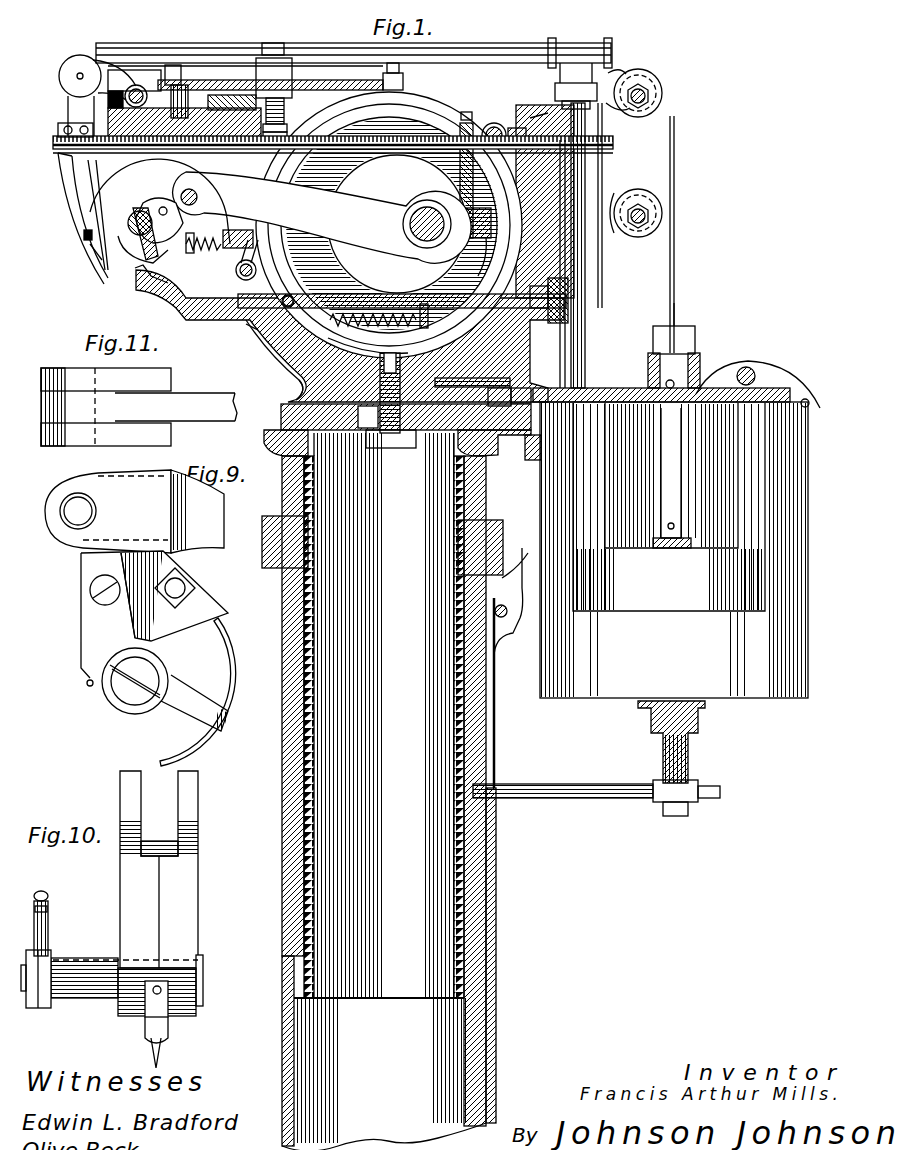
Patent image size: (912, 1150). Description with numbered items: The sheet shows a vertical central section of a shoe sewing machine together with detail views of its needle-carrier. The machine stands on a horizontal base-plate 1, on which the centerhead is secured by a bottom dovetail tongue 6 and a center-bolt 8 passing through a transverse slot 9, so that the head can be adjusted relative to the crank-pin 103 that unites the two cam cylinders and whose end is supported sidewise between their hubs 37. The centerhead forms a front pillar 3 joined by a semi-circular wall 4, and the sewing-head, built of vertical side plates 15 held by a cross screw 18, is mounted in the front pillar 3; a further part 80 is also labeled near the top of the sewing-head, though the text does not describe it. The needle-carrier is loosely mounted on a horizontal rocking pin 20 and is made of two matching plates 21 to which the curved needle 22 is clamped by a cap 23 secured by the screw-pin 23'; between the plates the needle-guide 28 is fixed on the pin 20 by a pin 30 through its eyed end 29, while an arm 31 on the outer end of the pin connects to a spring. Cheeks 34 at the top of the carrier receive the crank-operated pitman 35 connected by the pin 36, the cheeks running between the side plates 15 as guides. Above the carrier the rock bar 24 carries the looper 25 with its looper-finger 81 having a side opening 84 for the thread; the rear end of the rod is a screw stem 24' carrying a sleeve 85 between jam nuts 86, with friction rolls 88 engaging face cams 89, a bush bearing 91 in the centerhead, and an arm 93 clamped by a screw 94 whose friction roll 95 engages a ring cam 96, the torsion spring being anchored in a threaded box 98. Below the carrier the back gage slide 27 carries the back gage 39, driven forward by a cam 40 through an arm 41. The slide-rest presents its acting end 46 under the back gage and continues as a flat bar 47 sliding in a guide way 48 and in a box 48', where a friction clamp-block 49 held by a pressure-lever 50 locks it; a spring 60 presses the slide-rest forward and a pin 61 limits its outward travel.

In FIG. 1, the base-plate 1 is at (398, 417).
In FIG. 1, the front pillar 3 is at (350, 336).
In FIG. 1, the semi-circular wall 4 is at (364, 351).
In FIG. 1, the bottom dovetail tongue 6 is at (284, 378).
In FIG. 1, the center-bolt 8 is at (391, 449).
In FIG. 1, the transverse slot 9 is at (381, 393).
In FIG. 1, the vertical side plates 15 is at (160, 201).
In FIG. 1, the cross screw 18 is at (104, 112).
In FIG. 1, the rocking pin 20 is at (120, 212).
In FIG. 9, the rocking pin 20 is at (135, 681).
In FIG. 10, the rocking pin 20 is at (112, 975).
In FIG. 1, the matching plates 21 is at (150, 198).
In FIG. 9, the matching plates 21 is at (154, 614).
In FIG. 10, the matching plates 21 is at (159, 869).
In FIG. 1, the curved needle 22 is at (124, 244).
In FIG. 9, the curved needle 22 is at (184, 747).
In FIG. 10, the curved needle 22 is at (167, 1054).
In FIG. 9, the cap 23 is at (78, 598).
In FIG. 9, the screw-pin 23' is at (201, 588).
In FIG. 1, the rock bar 24 is at (333, 203).
In FIG. 1, the screw stem 24' is at (597, 245).
In FIG. 1, the looper 25 is at (68, 188).
In FIG. 1, the back gage slide 27 is at (238, 230).
In FIG. 1, the needle-guide 28 is at (139, 234).
In FIG. 9, the needle-guide 28 is at (176, 698).
In FIG. 10, the needle-guide 28 is at (138, 1024).
In FIG. 10, the eyed end 29 is at (160, 1010).
In FIG. 9, the pin 30 is at (80, 680).
In FIG. 10, the pin 30 is at (110, 998).
In FIG. 1, the arm 31 is at (545, 201).
In FIG. 10, the arm 31 is at (38, 924).
In FIG. 11, the cheeks 34 is at (106, 407).
In FIG. 9, the cheeks 34 is at (108, 511).
In FIG. 10, the cheeks 34 is at (112, 790).
In FIG. 1, the pitman 35 is at (322, 217).
In FIG. 11, the pitman 35 is at (176, 407).
In FIG. 9, the pitman 35 is at (197, 511).
In FIG. 1, the pin 36 is at (200, 191).
In FIG. 11, the pin 36 is at (72, 370).
In FIG. 9, the pin 36 is at (78, 511).
In FIG. 1, the hubs 37 is at (397, 224).
In FIG. 1, the back gage 39 is at (186, 250).
In FIG. 1, the cam 40 is at (322, 131).
In FIG. 1, the arm 41 is at (228, 258).
In FIG. 1, the acting end 46 is at (132, 270).
In FIG. 1, the flat bar 47 is at (400, 293).
In FIG. 1, the guide way 48 is at (231, 333).
In FIG. 1, the box 48' is at (493, 373).
In FIG. 1, the friction clamp-block 49 is at (560, 300).
In FIG. 1, the pressure-lever 50 is at (548, 283).
In FIG. 1, the spring 60 is at (379, 328).
In FIG. 1, the pin 61 is at (289, 293).
In FIG. 1, the bolt 80 is at (274, 87).
In FIG. 1, the looper-finger 81 is at (78, 232).
In FIG. 1, the side opening 84 is at (88, 248).
In FIG. 1, the sleeve 85 is at (520, 127).
In FIG. 1, the jam nuts 86 is at (600, 150).
In FIG. 1, the friction rolls 88 is at (494, 131).
In FIG. 1, the face cams 89 is at (400, 98).
In FIG. 1, the bush bearing 91 is at (522, 110).
In FIG. 1, the arm 93 is at (452, 160).
In FIG. 1, the screw 94 is at (471, 108).
In FIG. 1, the friction roll 95 is at (476, 234).
In FIG. 1, the ring cam 96 is at (474, 260).
In FIG. 1, the threaded box 98 is at (300, 131).
In FIG. 1, the crank-pin 103 is at (402, 217).